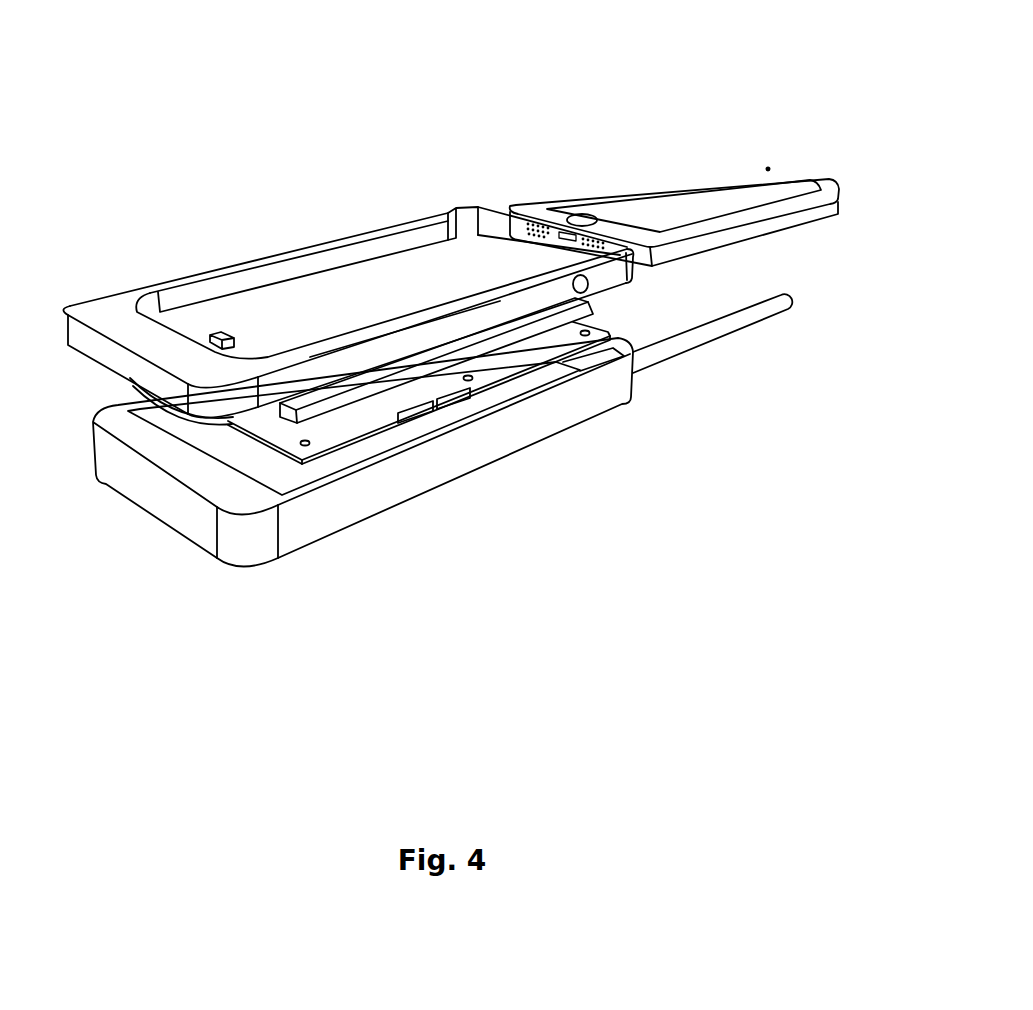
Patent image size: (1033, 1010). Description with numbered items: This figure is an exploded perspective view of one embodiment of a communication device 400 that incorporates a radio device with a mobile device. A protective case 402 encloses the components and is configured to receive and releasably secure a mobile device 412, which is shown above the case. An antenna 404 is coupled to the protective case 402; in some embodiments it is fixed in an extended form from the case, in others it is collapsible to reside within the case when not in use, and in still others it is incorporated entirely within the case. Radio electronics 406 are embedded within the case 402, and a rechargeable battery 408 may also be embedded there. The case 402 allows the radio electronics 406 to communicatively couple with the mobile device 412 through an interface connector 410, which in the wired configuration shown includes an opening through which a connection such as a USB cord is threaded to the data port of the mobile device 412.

The communication device 400 is at (348, 211).
The protective case 402 is at (362, 502).
The antenna 404 is at (655, 360).
The radio electronics 406 is at (328, 447).
The rechargeable battery 408 is at (470, 352).
The interface connector 410 is at (220, 334).
The mobile device 412 is at (687, 190).